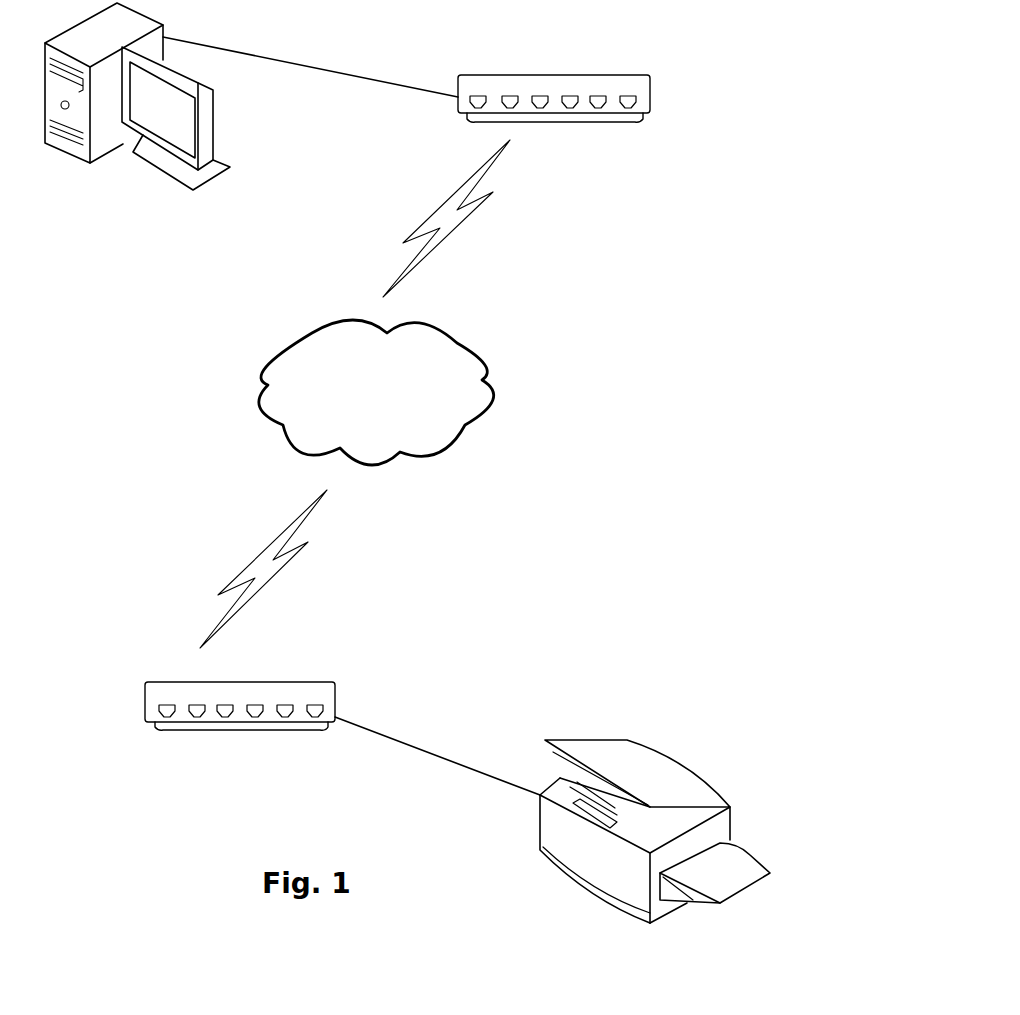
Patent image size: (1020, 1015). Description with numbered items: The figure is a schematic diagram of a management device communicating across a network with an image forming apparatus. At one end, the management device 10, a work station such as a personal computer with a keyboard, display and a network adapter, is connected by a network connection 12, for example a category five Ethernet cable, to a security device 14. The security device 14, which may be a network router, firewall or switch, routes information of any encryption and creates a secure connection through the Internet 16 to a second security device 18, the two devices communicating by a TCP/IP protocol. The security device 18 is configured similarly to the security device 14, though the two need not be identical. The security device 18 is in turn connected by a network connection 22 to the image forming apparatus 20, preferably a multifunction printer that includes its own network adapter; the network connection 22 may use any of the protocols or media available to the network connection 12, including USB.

The management device 10 is at (163, 25).
The network connection 12 is at (315, 67).
The security device 14 is at (620, 75).
The Internet 16 is at (267, 355).
The security device 18 is at (140, 682).
The image forming apparatus 20 is at (647, 745).
The network connection 22 is at (437, 755).